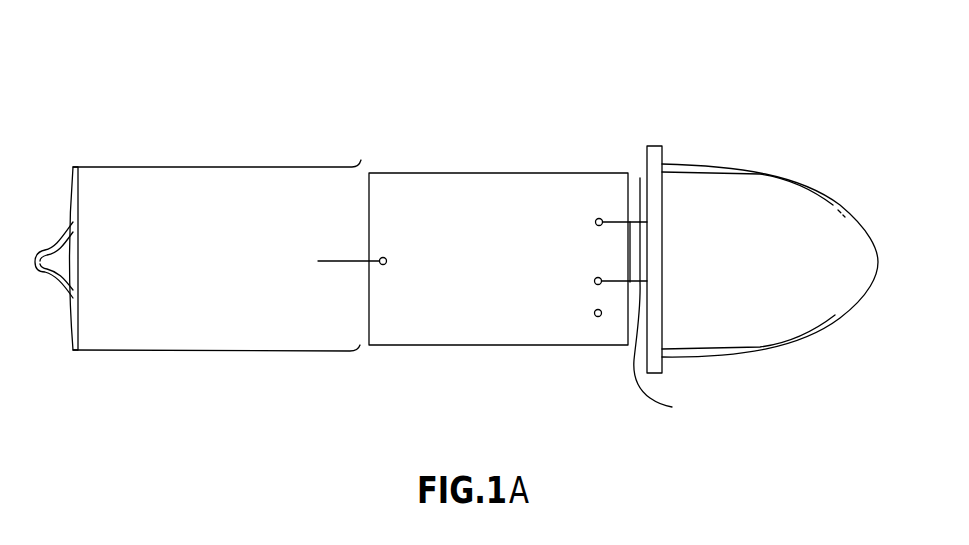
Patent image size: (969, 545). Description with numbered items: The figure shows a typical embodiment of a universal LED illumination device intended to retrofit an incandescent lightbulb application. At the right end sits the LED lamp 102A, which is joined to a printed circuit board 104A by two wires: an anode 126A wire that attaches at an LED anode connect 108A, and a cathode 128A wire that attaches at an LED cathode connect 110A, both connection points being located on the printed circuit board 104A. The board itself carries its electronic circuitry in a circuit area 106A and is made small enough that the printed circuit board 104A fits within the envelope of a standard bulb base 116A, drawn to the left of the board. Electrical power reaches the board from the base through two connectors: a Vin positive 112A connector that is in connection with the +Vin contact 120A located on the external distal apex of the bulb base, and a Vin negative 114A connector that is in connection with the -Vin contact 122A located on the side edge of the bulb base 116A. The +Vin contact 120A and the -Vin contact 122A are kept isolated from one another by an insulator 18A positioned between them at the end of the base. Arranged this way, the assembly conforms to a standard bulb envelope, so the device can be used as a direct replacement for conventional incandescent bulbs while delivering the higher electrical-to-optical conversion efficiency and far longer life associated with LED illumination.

The LED lamp 102A is at (838, 200).
The printed circuit board 104A is at (397, 185).
The circuit area 106A is at (478, 253).
The LED anode connect 108A is at (595, 220).
The LED cathode connect 110A is at (594, 283).
The Vin positive connector 112A is at (381, 264).
The Vin negative connector 114A is at (596, 316).
The standard bulb base 116A is at (265, 166).
The insulator 18A is at (78, 167).
The +Vin contact 120A is at (42, 250).
The -Vin contact 122A is at (104, 351).
The anode 126A is at (640, 178).
The cathode 128A is at (684, 332).